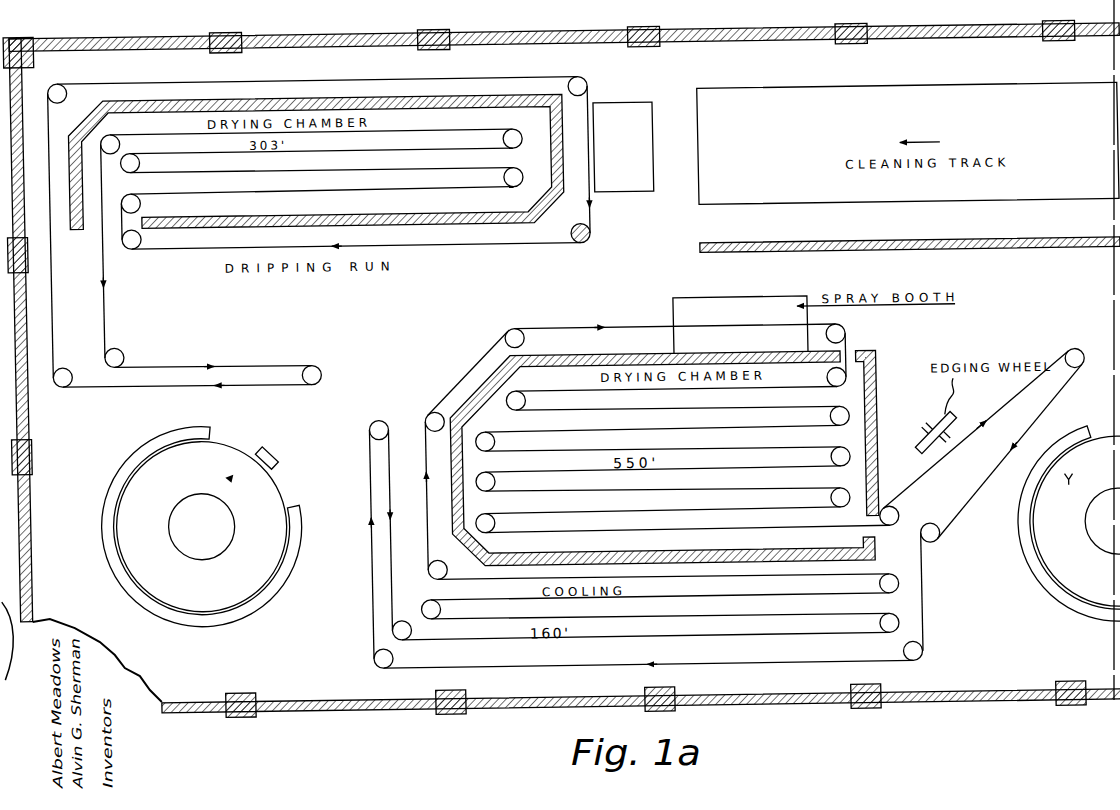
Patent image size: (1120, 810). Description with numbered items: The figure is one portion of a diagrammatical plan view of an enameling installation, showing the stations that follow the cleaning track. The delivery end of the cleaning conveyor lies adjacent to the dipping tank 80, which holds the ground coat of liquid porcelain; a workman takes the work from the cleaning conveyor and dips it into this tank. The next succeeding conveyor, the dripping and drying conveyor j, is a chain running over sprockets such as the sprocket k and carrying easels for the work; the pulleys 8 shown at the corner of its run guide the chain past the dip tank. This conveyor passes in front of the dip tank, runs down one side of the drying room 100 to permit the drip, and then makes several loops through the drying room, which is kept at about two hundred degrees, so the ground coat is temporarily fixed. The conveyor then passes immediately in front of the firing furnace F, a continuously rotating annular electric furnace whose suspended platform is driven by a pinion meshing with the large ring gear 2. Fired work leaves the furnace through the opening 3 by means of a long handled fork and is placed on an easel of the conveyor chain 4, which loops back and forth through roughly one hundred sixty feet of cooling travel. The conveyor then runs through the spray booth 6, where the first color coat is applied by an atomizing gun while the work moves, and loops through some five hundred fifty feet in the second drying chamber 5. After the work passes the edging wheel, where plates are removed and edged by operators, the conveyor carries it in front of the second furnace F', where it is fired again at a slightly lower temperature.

The drying room 100 is at (326, 96).
The dipping tank 80 is at (642, 104).
The guide pulleys 8 is at (584, 230).
The spray booth 6 is at (725, 300).
The second drying chamber 5 is at (874, 394).
The conveyor chain 4 is at (370, 495).
The opening 3 is at (288, 486).
The ring gear 2 is at (248, 446).
The firing furnace F is at (185, 526).
The second furnace F' is at (1045, 523).
The dripping and drying conveyor j is at (540, 281).
The sprocket k is at (616, 219).